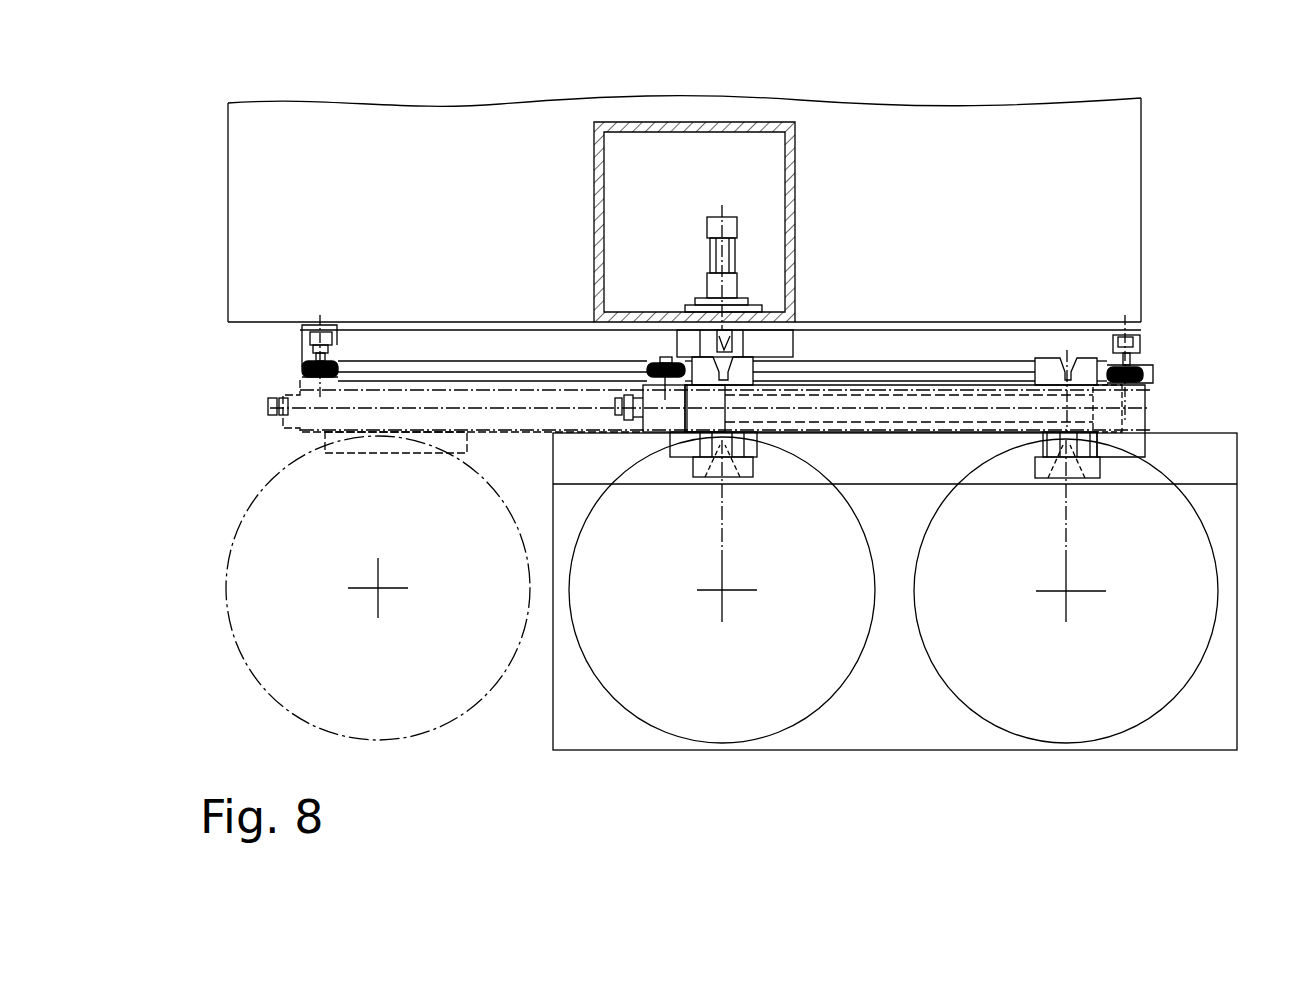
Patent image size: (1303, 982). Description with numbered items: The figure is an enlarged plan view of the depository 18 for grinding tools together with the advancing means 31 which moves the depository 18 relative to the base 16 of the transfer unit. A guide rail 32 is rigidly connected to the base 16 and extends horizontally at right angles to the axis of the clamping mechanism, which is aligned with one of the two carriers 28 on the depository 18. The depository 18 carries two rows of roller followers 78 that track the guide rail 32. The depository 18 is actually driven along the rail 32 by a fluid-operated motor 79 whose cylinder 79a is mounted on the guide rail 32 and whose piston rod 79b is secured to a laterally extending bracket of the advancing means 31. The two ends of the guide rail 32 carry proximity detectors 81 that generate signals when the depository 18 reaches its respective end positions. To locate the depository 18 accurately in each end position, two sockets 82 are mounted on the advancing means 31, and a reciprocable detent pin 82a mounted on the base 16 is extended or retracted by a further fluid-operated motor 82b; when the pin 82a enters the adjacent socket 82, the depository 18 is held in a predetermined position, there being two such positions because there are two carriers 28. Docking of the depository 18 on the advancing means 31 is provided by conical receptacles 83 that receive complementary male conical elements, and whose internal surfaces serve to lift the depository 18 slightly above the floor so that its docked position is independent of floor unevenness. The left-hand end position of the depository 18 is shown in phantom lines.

The base 16 is at (1122, 232).
The depository 18 is at (603, 730).
The carriers 28 is at (722, 594).
The advancing means 31 is at (1166, 411).
The guide rail 32 is at (933, 370).
The roller followers 78 is at (650, 368).
The fluid-operated motor 79 is at (964, 392).
The cylinder 79a is at (933, 412).
The piston rod 79b is at (672, 408).
The proximity detectors 81 is at (320, 340).
The sockets 82 is at (738, 368).
The detent pin 82a is at (720, 345).
The fluid-operated motor 82b is at (750, 267).
The conical receptacles 83 is at (730, 467).